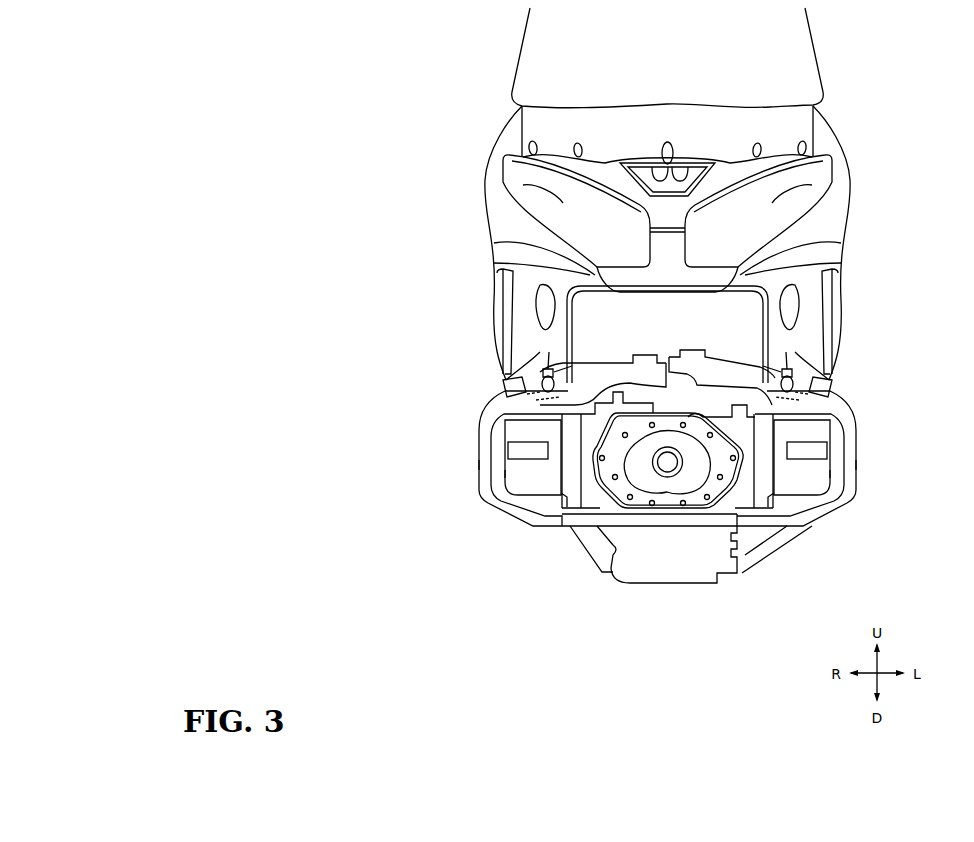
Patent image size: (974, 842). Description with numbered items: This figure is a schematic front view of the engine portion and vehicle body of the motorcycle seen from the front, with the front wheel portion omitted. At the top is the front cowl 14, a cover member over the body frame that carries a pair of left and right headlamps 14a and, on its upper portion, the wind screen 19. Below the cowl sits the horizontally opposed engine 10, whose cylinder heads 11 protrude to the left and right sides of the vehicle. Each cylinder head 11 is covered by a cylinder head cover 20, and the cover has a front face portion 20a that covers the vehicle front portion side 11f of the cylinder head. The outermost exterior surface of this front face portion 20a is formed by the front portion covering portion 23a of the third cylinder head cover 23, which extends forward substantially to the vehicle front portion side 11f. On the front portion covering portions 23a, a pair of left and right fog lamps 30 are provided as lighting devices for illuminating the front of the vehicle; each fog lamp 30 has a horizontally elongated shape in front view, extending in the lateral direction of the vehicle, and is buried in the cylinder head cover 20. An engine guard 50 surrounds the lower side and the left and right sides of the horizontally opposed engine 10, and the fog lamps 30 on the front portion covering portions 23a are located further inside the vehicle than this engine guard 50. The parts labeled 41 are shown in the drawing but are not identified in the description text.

The horizontally opposed engine 10 is at (650, 534).
The cylinder head 11 is at (773, 507).
The vehicle front portion side of the cylinder head 11f is at (764, 463).
The front cowl 14 is at (833, 207).
The headlamp 14a is at (851, 181).
The wind screen 19 is at (803, 52).
The cylinder head cover 20 is at (802, 497).
The front face portion 20a is at (798, 472).
The third cylinder head cover 23 is at (828, 411).
The front portion covering portion 23a is at (793, 432).
The fog lamp 30 is at (810, 452).
The radiator bracket 41 is at (732, 373).
The engine guard 50 is at (847, 410).